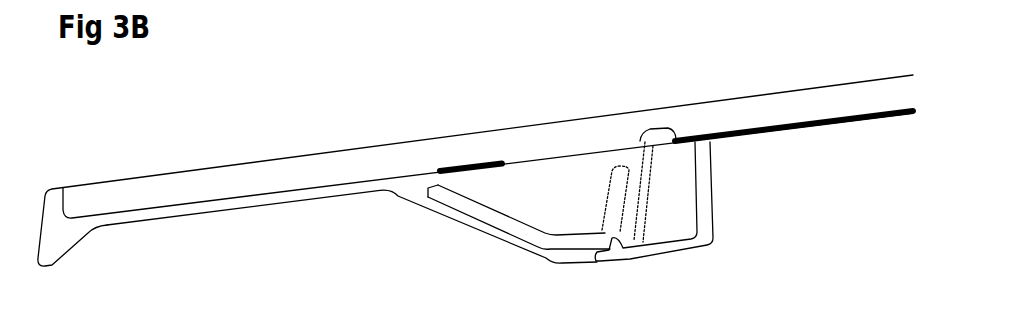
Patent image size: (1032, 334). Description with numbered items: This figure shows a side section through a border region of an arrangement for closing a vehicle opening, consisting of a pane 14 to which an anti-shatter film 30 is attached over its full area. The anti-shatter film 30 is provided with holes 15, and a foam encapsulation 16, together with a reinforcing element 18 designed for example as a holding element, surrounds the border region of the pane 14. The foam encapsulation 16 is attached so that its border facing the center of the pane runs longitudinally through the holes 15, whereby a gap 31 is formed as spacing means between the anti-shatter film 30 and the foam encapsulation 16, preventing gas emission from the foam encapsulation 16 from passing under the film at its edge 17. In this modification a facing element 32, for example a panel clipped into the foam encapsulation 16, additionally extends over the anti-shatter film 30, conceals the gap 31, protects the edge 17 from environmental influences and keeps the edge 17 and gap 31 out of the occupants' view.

The pane 14 is at (815, 102).
The holes 15 is at (592, 136).
The foam encapsulation 16 is at (411, 185).
The edge 17 is at (668, 148).
The reinforcing element 18 is at (461, 202).
The anti-shatter film 30 is at (474, 166).
The gap 31 is at (658, 127).
The facing element 32 is at (707, 236).